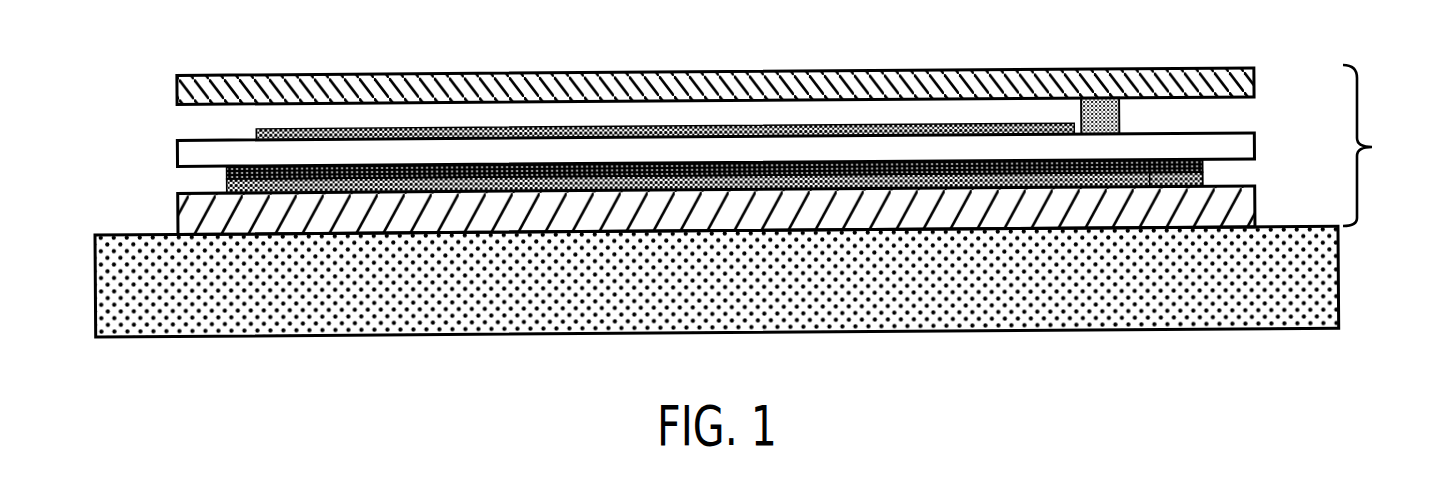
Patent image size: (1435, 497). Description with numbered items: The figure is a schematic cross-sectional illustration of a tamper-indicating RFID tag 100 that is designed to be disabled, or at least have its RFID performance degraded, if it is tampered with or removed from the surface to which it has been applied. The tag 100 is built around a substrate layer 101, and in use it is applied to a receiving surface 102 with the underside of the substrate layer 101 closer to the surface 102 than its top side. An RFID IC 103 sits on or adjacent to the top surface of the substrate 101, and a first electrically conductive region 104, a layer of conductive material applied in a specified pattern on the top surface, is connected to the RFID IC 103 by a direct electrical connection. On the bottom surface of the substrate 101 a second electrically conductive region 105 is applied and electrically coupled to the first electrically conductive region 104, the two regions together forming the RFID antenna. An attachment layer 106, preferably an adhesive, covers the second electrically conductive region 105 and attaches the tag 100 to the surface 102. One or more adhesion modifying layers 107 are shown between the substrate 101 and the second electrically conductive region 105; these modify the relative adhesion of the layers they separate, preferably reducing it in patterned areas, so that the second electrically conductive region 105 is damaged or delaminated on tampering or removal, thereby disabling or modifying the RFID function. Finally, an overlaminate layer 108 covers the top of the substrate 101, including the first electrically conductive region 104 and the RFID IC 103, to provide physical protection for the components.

The tamper-indicating RFID tag 100 is at (1375, 145).
The substrate layer 101 is at (177, 150).
The receiving surface 102 is at (395, 337).
The RFID IC 103 is at (1107, 103).
The first electrically conductive region 104 is at (258, 138).
The second electrically conductive region 105 is at (227, 188).
The attachment layer 106 is at (177, 222).
The adhesion modifying layer 107 is at (1205, 165).
The overlaminate layer 108 is at (607, 73).